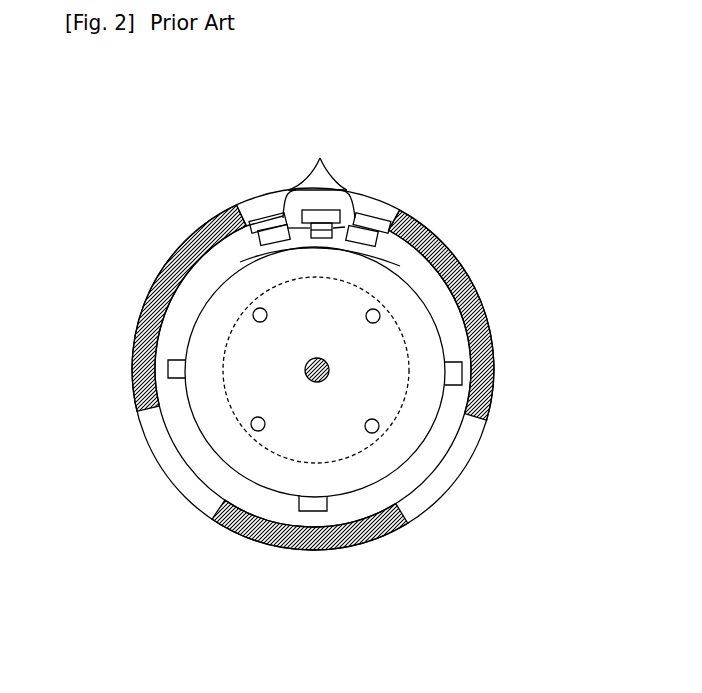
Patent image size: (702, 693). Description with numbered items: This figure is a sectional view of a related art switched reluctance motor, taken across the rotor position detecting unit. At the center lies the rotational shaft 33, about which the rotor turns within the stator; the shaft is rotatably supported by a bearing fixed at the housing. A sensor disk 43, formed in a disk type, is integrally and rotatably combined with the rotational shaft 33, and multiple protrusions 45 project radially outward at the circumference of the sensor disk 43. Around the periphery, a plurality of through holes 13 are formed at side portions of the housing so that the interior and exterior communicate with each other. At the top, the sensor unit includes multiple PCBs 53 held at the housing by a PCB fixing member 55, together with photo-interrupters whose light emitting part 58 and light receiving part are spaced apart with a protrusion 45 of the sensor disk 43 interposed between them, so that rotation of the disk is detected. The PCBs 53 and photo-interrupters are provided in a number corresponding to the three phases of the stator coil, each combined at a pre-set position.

The through holes 13 is at (483, 424).
The rotational shaft 33 is at (329, 367).
The sensor disk 43 is at (393, 418).
The protrusions 45 is at (176, 368).
The PCBs 53 is at (320, 217).
The PCB fixing member 55 is at (380, 210).
The light emitting part 58 is at (350, 243).